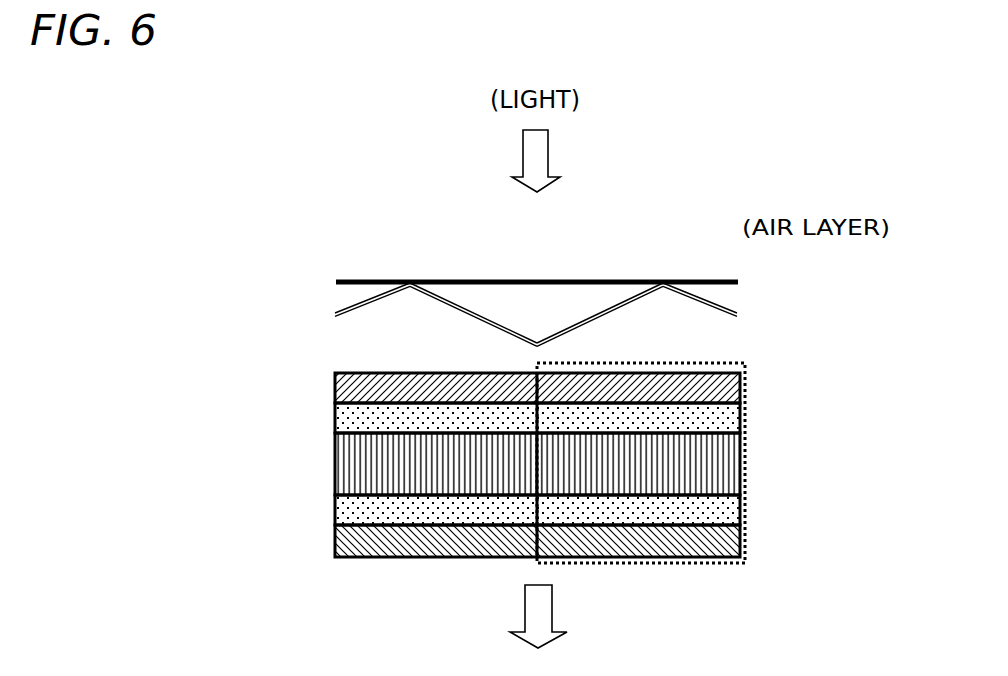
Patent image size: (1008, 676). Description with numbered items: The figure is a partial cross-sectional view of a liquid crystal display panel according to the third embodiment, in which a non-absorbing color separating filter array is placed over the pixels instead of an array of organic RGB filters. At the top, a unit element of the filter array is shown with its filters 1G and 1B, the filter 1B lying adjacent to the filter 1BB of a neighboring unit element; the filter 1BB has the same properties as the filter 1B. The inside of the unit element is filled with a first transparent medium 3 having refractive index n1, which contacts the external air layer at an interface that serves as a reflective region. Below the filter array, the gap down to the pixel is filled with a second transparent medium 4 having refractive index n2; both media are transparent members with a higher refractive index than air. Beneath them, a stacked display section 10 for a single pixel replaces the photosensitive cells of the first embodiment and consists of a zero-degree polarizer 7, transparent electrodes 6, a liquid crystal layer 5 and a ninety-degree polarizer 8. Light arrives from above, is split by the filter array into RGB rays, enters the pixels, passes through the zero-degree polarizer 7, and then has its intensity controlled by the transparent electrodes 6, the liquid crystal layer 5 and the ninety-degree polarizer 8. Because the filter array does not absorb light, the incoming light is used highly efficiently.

The first transparent medium 3 is at (537, 312).
The filter 1G is at (487, 315).
The filter 1B is at (588, 315).
The filter 1BB is at (735, 308).
The second transparent medium 4 is at (662, 338).
The liquid crystal layer 5 is at (387, 463).
The transparent electrodes 6 is at (713, 508).
The 0-degree polarizer 7 is at (730, 382).
The 90-degree polarizer 8 is at (723, 538).
The display section 10 is at (728, 565).